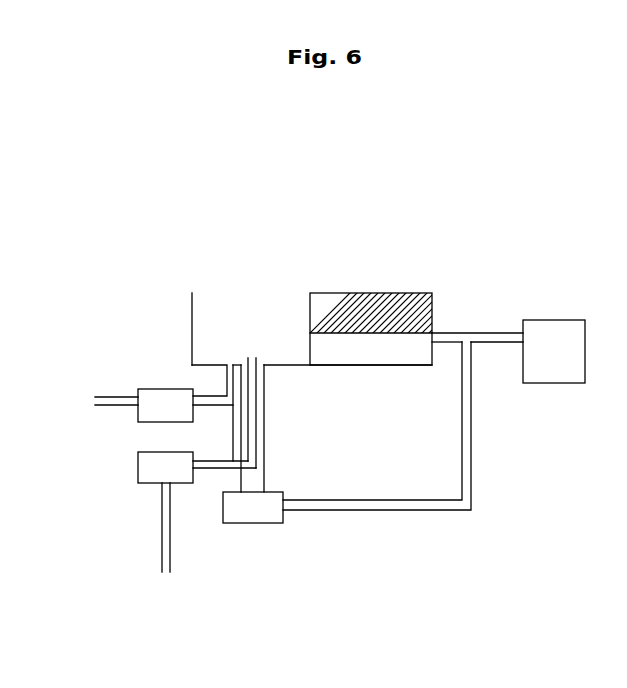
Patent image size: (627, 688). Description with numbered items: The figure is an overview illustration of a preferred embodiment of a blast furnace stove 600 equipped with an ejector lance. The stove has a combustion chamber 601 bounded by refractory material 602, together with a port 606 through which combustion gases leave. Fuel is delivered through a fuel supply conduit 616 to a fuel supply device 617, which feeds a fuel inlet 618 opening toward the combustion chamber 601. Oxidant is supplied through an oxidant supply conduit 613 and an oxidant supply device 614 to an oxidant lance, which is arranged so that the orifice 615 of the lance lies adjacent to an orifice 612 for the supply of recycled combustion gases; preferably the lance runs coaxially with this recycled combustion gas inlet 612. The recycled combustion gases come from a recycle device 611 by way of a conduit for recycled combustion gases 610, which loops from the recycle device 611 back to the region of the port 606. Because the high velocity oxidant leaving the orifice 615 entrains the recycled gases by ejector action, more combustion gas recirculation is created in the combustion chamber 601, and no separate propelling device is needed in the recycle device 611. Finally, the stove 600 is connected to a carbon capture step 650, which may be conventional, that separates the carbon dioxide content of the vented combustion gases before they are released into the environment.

The blast furnace stove 600 is at (482, 552).
The combustion chamber 601 is at (207, 303).
The refractory material 602 is at (383, 310).
The port 606 is at (442, 334).
The conduit for recycled combustion gases 610 is at (471, 477).
The recycle device 611 is at (258, 527).
The orifice for supply of recycled combustion gases 612 is at (257, 363).
The oxidant supply conduit 613 is at (170, 548).
The oxidant supply device 614 is at (178, 485).
The orifice of the lance 615 is at (250, 358).
The fuel supply conduit 616 is at (120, 394).
The fuel supply device 617 is at (160, 390).
The fuel inlet 618 is at (228, 365).
The carbon capture step 650 is at (553, 320).